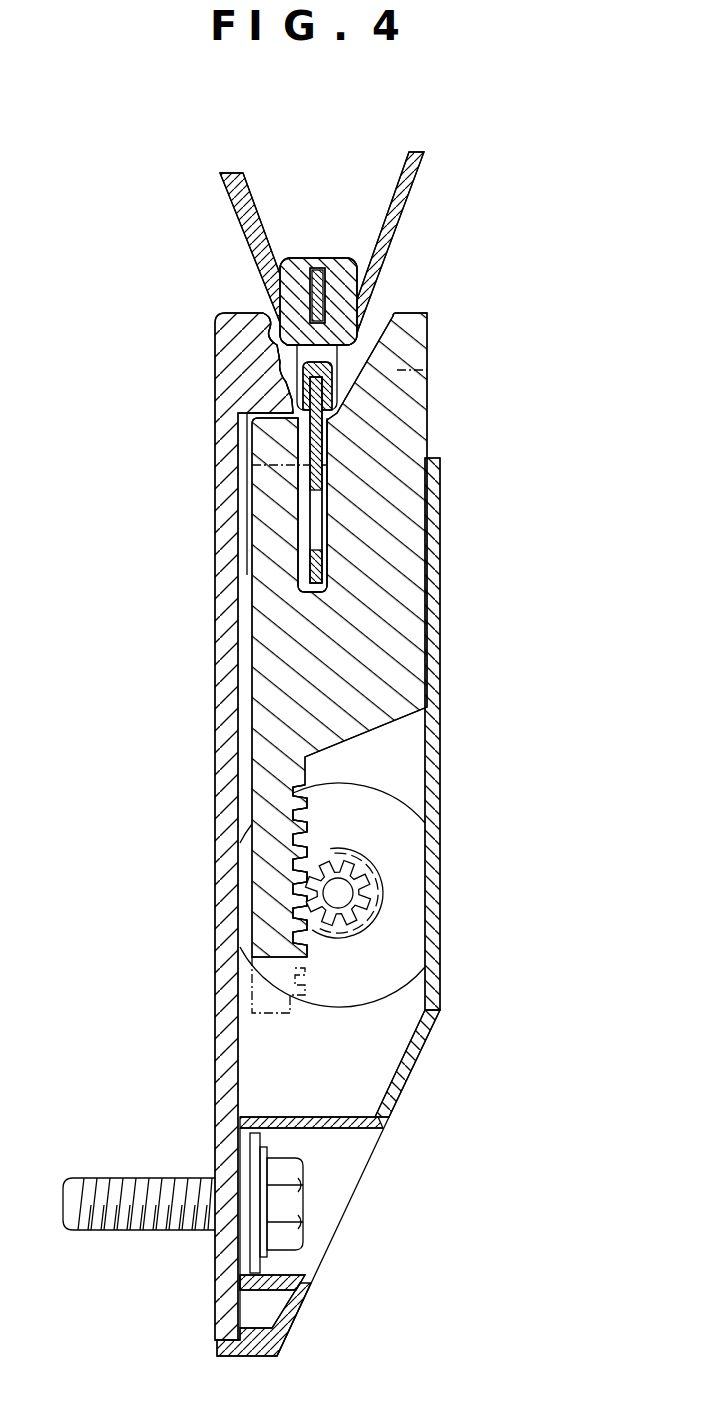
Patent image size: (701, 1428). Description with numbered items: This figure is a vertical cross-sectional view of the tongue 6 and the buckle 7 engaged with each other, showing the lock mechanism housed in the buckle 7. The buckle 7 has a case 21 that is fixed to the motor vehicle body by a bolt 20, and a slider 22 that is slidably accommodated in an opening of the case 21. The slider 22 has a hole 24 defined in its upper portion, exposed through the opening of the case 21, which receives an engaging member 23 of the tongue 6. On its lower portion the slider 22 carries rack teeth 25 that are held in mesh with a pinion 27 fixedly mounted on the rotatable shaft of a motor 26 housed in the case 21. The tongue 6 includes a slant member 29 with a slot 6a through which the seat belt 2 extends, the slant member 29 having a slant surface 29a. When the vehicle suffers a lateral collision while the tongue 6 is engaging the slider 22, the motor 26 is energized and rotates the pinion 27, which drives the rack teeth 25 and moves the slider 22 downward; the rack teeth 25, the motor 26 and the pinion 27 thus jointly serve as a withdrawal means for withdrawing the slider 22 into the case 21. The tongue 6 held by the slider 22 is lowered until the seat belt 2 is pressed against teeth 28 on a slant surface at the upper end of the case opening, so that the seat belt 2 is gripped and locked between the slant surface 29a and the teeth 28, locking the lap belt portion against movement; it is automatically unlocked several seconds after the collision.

The seat belt 2 is at (411, 190).
The tongue 6 is at (320, 252).
The slot 6a is at (322, 357).
The buckle 7 is at (148, 450).
The bolt 20 is at (112, 1177).
The case 21 is at (227, 777).
The slider 22 is at (393, 617).
The engaging member 23 is at (316, 440).
The hole 24 is at (300, 516).
The rack teeth 25 is at (313, 833).
The motor 26 is at (400, 835).
The pinion 27 is at (363, 908).
The teeth 28 is at (276, 326).
The slant member 29 is at (298, 260).
The slant surface 29a is at (296, 262).